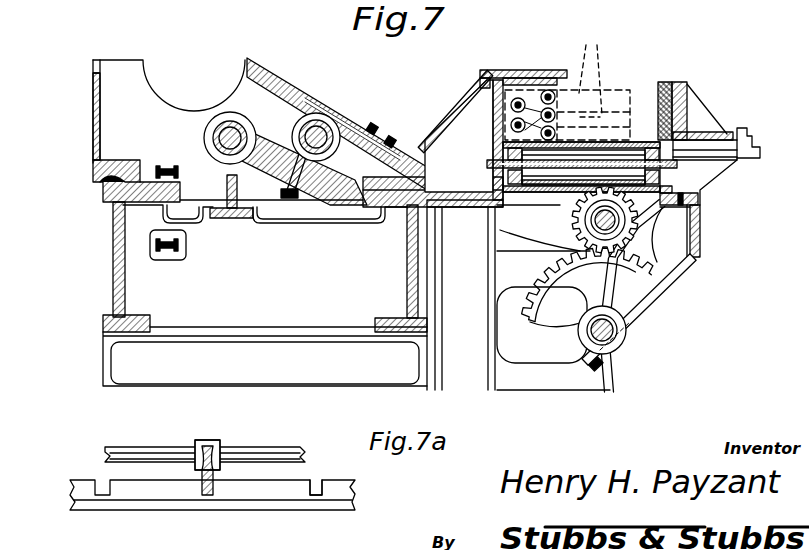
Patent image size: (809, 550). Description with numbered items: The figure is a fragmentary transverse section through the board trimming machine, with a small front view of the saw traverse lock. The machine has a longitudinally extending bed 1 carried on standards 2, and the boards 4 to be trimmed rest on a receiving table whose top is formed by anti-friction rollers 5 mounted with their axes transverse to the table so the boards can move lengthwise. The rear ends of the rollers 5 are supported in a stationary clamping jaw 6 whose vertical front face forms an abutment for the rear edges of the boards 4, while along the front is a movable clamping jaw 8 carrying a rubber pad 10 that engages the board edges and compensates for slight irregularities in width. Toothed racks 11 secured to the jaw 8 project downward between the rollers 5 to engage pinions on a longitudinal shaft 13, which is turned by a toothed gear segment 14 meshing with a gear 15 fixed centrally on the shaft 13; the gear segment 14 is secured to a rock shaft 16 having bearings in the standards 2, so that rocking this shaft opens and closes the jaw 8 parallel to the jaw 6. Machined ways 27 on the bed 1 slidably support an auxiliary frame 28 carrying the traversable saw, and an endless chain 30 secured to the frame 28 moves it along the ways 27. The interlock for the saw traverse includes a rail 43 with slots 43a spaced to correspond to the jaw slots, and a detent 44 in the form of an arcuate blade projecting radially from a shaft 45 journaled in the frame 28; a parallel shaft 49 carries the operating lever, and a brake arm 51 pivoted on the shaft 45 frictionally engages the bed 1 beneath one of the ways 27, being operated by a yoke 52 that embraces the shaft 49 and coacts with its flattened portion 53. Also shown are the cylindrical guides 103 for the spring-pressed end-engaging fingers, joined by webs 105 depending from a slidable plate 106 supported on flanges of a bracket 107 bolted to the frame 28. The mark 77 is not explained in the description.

In FIG. 7, the bed 1 is at (407, 270).
In FIG. 7, the standards 2 is at (265, 356).
In FIG. 7, the boards 4 is at (567, 85).
In FIG. 7, the anti-friction rollers 5 is at (556, 194).
In FIG. 7, the stationary clamping jaw 6 is at (476, 108).
In FIG. 7, the movable clamping jaw 8 is at (693, 94).
In FIG. 7, the pad 10 is at (664, 95).
In FIG. 7, the toothed racks 11 is at (708, 177).
In FIG. 7, the longitudinal shaft 13 is at (618, 220).
In FIG. 7, the toothed gear segment 14 is at (592, 282).
In FIG. 7, the gear 15 is at (672, 255).
In FIG. 7, the rock shaft 16 is at (627, 325).
In FIG. 7, the machined ways 27 is at (93, 168).
In FIG. 7, the auxiliary frame 28 is at (93, 110).
In FIG. 7, the endless chain 30 is at (165, 167).
In FIG. 7, the rail 43 is at (232, 218).
In FIG. 7A, the rail 43 is at (282, 496).
In FIG. 7A, the slots 43a is at (322, 486).
In FIG. 7A, the detent 44 is at (200, 478).
In FIG. 7, the shaft 45 is at (214, 112).
In FIG. 7A, the shaft 45 is at (135, 452).
In FIG. 7, the shaft 49 is at (345, 118).
In FIG. 7, the brake arm 51 is at (335, 200).
In FIG. 7, the yoke 52 is at (302, 88).
In FIG. 7, the flattened portion 53 is at (337, 114).
In FIG. 7, the reference mark 77 is at (689, 15).
In FIG. 7, the cylindrical guides 103 is at (493, 135).
In FIG. 7, the webs 105 is at (520, 80).
In FIG. 7, the slidable plate 106 is at (550, 70).
In FIG. 7, the bracket 107 is at (440, 105).